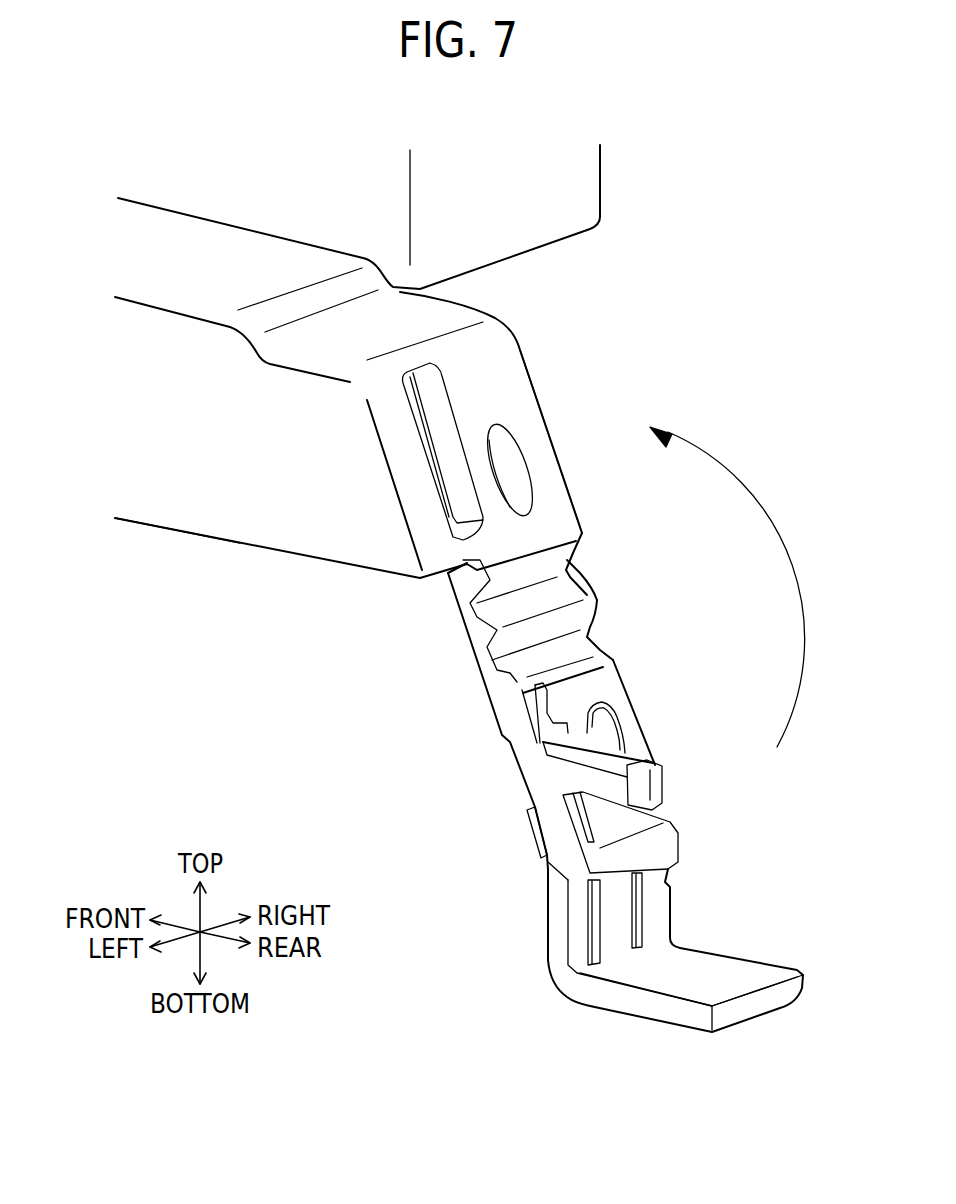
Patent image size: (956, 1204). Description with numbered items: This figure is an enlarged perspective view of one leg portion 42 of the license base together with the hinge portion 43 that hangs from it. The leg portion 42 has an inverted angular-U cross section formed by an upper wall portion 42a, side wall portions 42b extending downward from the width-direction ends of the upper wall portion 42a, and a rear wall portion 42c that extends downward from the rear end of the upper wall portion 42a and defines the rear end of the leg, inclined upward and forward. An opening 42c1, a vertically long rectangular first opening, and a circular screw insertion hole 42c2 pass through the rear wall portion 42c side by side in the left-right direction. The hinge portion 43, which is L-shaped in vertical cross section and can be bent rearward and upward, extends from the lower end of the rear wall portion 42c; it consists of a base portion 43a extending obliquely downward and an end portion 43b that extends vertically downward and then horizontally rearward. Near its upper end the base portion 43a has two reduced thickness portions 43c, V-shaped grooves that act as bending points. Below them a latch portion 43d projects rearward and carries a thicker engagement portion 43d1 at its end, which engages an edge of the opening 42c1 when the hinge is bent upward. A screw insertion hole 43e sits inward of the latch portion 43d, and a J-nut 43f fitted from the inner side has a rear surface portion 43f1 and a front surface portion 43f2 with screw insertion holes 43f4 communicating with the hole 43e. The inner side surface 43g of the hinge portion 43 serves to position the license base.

The leg portion 42 is at (150, 528).
The upper wall portion 42a is at (195, 227).
The side wall portion 42b is at (228, 503).
The rear wall portion 42c is at (510, 367).
The opening 42c1 is at (427, 423).
The screw insertion hole 42c2 is at (515, 467).
The hinge portion 43 is at (590, 578).
The base portion 43a is at (603, 647).
The end portion 43b is at (697, 960).
The reduced thickness portion 43c is at (487, 637).
The latch portion 43d is at (580, 770).
The engagement portion 43d1 is at (660, 777).
The screw insertion hole 43e is at (617, 710).
The J-nut 43f is at (615, 683).
The rear surface portion 43f1 is at (625, 708).
The front surface portion 43f2 is at (532, 835).
The screw insertion hole 43f4 is at (623, 735).
The side surface 43g is at (767, 965).